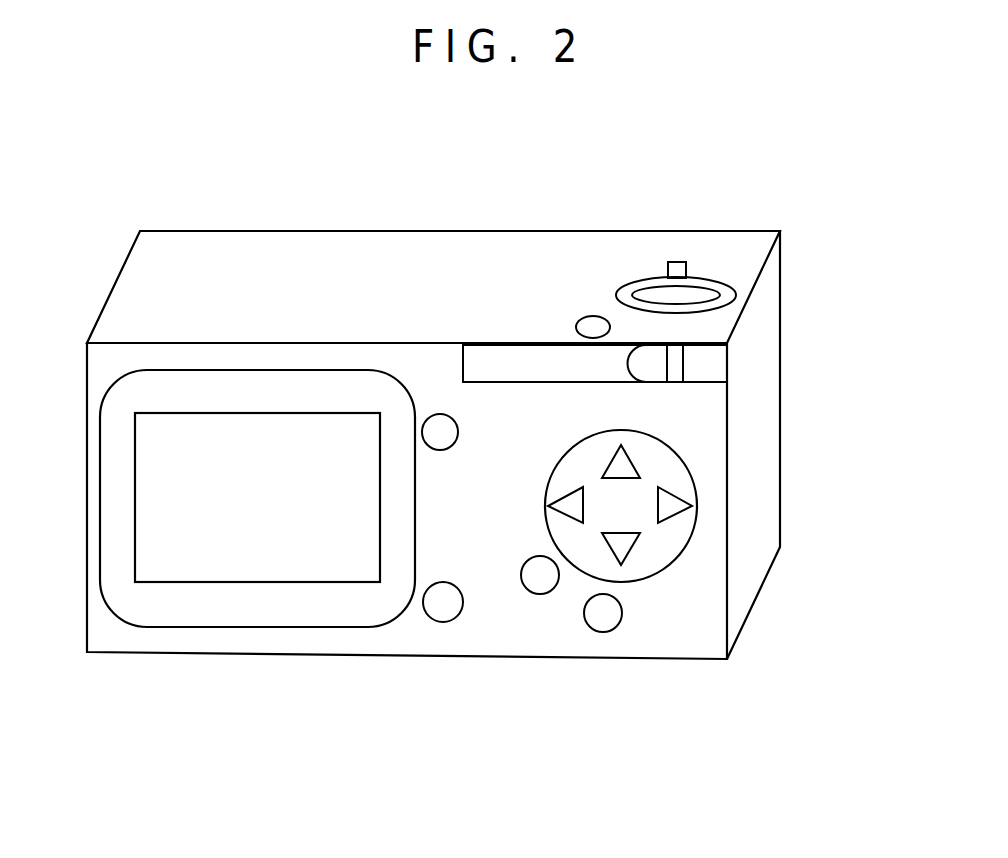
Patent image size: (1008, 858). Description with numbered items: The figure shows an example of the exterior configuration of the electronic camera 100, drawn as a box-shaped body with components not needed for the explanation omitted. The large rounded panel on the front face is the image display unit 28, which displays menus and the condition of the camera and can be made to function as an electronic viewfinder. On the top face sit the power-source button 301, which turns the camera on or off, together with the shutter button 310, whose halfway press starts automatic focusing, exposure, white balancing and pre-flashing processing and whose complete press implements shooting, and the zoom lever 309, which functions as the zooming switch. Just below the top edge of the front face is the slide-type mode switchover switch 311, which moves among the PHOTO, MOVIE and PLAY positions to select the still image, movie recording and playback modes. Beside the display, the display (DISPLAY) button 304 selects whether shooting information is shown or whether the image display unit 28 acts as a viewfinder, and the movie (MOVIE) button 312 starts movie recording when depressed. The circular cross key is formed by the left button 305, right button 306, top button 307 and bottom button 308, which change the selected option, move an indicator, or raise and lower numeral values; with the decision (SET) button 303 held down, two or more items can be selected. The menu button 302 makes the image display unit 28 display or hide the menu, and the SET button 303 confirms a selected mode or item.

The electronic camera 100 is at (277, 231).
The image display unit 28 is at (188, 582).
The power-source button 301 is at (593, 316).
The menu button 302 is at (602, 626).
The decision (SET) button 303 is at (543, 593).
The display (DISPLAY) button 304 is at (437, 413).
The left button 305 is at (575, 502).
The right button 306 is at (678, 508).
The top button 307 is at (618, 467).
The bottom button 308 is at (620, 547).
The zoom lever 309 is at (672, 262).
The shutter button 310 is at (690, 295).
The mode switchover switch 311 is at (680, 362).
The movie (MOVIE) button 312 is at (421, 607).